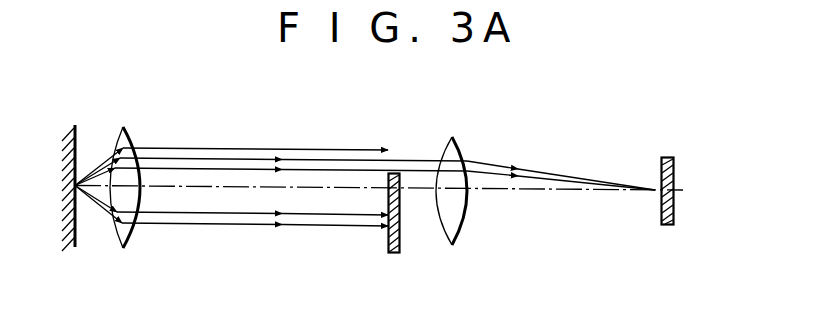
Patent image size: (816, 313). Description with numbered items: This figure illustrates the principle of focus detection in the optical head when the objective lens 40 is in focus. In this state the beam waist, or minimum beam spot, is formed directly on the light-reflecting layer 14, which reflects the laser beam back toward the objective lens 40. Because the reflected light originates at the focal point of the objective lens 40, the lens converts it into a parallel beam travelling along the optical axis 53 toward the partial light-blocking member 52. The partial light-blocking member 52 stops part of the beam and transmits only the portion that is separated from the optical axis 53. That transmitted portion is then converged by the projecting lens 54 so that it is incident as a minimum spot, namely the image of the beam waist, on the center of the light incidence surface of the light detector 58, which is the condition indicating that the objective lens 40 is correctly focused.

The light-reflecting layer 14 is at (78, 140).
The objective lens 40 is at (134, 133).
The partial light-blocking member 52 is at (400, 238).
The optical axis 53 is at (565, 192).
The projecting lens 54 is at (455, 155).
The light detector 58 is at (666, 157).